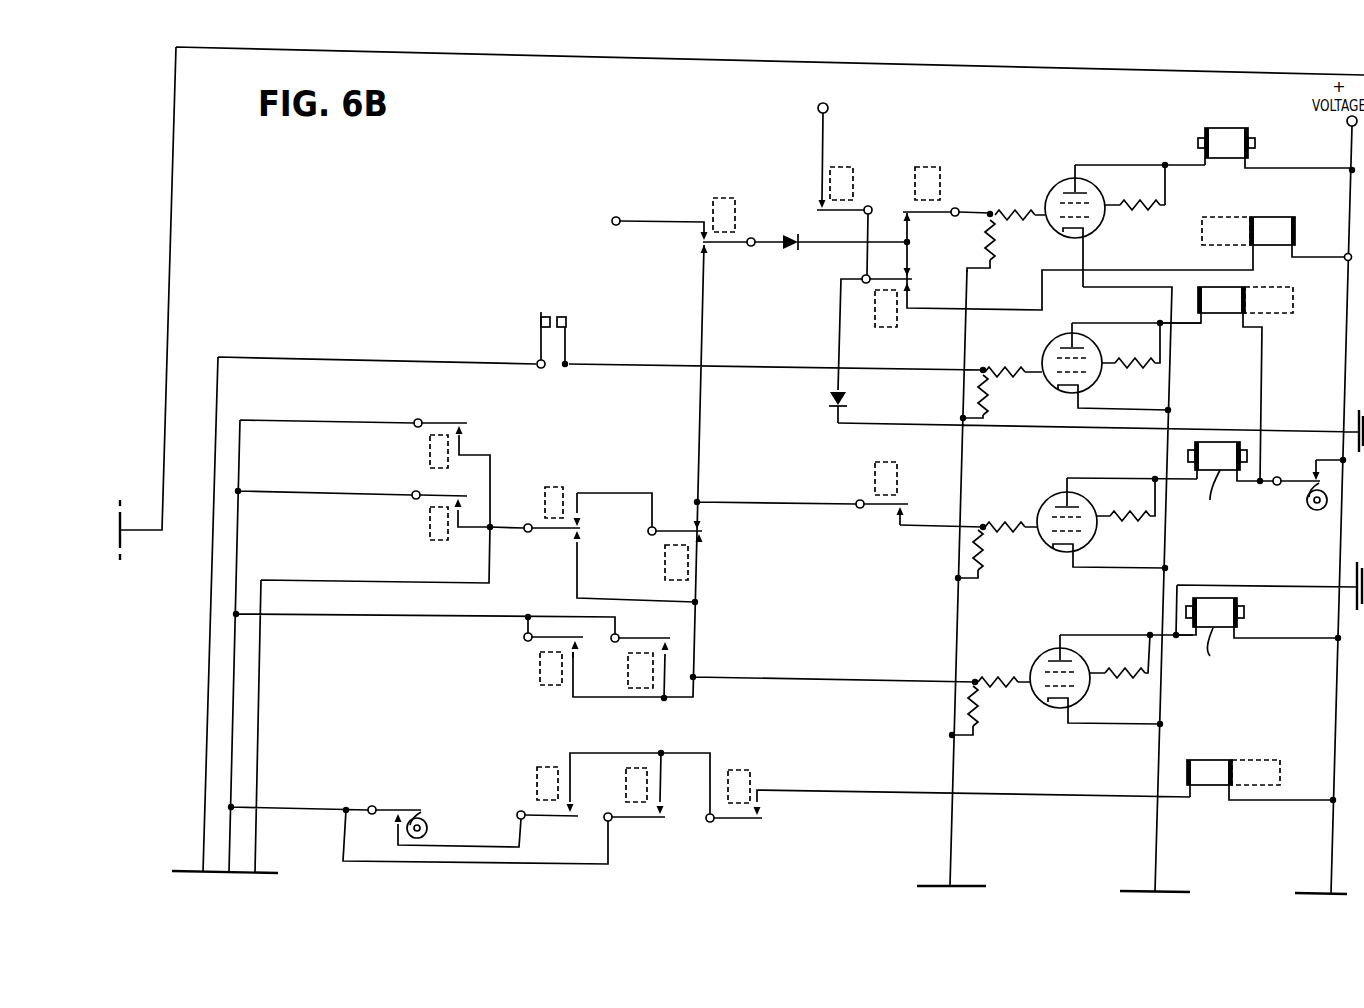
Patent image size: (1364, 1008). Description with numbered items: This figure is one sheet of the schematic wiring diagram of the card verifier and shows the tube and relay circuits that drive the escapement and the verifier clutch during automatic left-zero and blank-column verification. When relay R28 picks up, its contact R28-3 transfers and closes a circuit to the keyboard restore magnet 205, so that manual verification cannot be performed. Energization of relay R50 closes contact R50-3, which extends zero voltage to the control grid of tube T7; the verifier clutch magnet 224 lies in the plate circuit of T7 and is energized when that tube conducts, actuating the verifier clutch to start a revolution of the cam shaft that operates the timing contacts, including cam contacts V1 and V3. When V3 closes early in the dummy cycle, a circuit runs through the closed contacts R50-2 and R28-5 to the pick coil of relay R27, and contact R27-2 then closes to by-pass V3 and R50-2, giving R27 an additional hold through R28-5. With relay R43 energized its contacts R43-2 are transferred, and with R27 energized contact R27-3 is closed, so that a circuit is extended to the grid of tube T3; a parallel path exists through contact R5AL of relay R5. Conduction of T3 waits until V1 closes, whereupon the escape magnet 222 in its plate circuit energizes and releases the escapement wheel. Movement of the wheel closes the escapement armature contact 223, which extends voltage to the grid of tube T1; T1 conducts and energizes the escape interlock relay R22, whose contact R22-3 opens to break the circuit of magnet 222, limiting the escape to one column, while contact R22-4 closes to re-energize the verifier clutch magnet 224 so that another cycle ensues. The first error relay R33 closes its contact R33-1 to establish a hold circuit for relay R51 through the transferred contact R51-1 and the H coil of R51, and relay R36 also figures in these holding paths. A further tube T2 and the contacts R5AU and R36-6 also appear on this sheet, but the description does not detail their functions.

The keyboard restore magnet 205 is at (1243, 130).
The escape magnet 222 is at (1196, 445).
The escapement armature contact 223 is at (553, 315).
The verifier clutch magnet 224 is at (1226, 607).
The tube T1 is at (1050, 342).
The transistor T2 is at (1056, 184).
The tube T3 is at (1045, 502).
The tube T7 is at (1038, 657).
The cam contact V1 is at (1308, 478).
The cam contact V3 is at (405, 808).
The relay R5 is at (942, 183).
The escape interlock relay R22 is at (1224, 316).
The relay R27 is at (1213, 788).
The relay R28 is at (710, 206).
The first error relay R33 is at (855, 183).
The relay R36 is at (663, 565).
The relay R43 is at (543, 502).
The relay R50 is at (628, 672).
The relay R51 is at (886, 327).
The relay R5 upper contact R5AU is at (909, 216).
The relay contact R5AL is at (436, 494).
The relay contact R28-3 is at (708, 250).
The relay contact R28-5 is at (765, 812).
The relay contact R33-1 is at (815, 205).
The relay contact R51-1 is at (915, 286).
The relay contact R27-3 is at (464, 428).
The relay contact R27-2 is at (670, 812).
The relay contacts R43-2 is at (580, 524).
The relay R36 contact 6 R36-6 is at (705, 540).
The relay contact R22-3 is at (898, 515).
The relay contact R22-4 is at (570, 634).
The relay contact R50-3 is at (672, 645).
The relay contact R50-2 is at (582, 812).